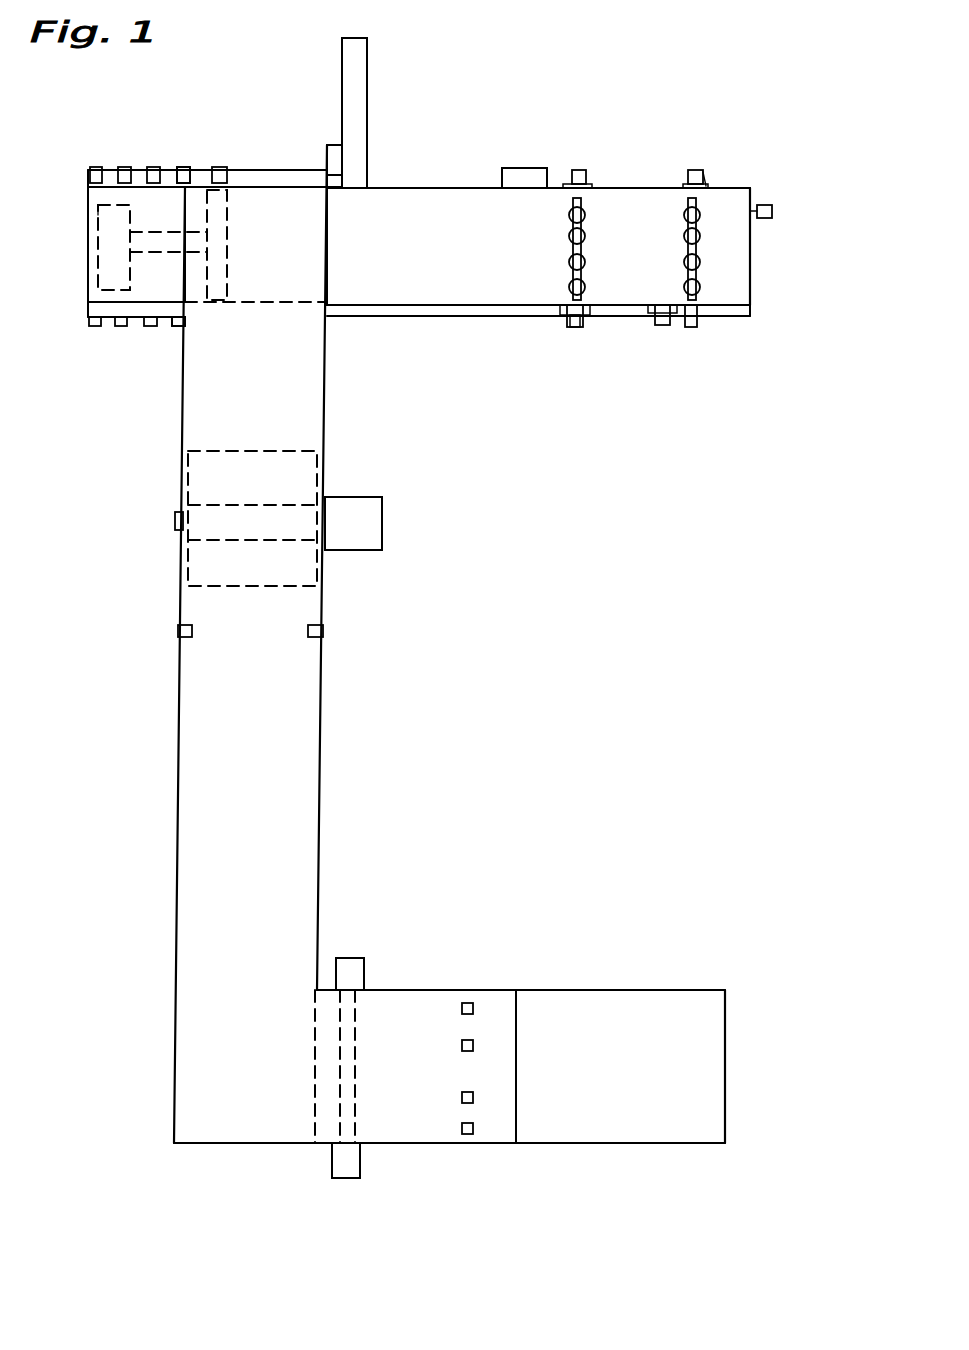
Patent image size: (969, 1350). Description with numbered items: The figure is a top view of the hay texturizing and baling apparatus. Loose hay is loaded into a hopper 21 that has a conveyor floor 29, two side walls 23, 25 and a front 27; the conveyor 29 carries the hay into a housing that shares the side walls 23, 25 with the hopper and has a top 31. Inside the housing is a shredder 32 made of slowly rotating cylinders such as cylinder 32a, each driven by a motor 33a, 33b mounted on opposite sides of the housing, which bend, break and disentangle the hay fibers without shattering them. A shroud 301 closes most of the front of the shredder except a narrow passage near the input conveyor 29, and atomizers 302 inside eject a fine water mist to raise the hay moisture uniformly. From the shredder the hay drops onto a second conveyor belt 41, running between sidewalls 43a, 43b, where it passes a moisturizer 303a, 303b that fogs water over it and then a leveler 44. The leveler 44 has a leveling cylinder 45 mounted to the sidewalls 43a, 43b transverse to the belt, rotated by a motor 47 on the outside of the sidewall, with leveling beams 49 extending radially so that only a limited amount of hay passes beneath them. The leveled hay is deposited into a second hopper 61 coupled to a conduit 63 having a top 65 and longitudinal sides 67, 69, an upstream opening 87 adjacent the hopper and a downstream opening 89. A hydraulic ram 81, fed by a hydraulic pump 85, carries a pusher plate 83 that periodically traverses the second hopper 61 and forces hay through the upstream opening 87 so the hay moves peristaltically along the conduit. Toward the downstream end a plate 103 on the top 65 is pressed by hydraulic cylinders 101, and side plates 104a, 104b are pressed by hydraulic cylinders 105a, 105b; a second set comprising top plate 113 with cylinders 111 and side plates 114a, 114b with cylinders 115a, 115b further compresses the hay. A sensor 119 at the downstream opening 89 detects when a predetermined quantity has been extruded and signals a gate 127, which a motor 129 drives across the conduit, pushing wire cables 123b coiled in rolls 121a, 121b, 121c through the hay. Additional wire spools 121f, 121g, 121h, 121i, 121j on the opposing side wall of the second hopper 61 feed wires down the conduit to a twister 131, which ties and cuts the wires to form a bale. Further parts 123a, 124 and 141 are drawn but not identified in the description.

The hopper 21 is at (482, 1065).
The side wall 23 is at (640, 989).
The side wall 25 is at (645, 1144).
The front 27 is at (726, 1062).
The conveyor floor 29 is at (565, 1067).
The top 31 is at (423, 1070).
The shredder 32 is at (347, 1089).
The cylinder 32a is at (357, 1016).
The motor 33a is at (365, 962).
The motor 33b is at (361, 1165).
The second conveyor belt 41 is at (248, 644).
The sidewall 43a is at (177, 812).
The sidewall 43b is at (319, 812).
The leveler 44 is at (288, 540).
The leveling cylinder 45 is at (176, 522).
The motor 47 is at (383, 497).
The leveling beams 49 is at (318, 587).
The second hopper 61 is at (207, 243).
The conduit 63 is at (436, 316).
The top 65 is at (538, 246).
The longitudinal side 67 is at (520, 317).
The longitudinal side 69 is at (400, 187).
The hydraulic ram 81 is at (142, 262).
The pusher plate 83 is at (230, 210).
The hydraulic pump 85 is at (96, 204).
The upstream opening 87 is at (313, 285).
The downstream opening 89 is at (768, 244).
The hydraulic cylinders 101 is at (568, 287).
The plate 103 is at (570, 260).
The side plate 104a is at (572, 186).
The side plate 104b is at (567, 327).
The hydraulic cylinder 105a is at (588, 178).
The hydraulic cylinder 105b is at (578, 328).
The hydraulic cylinders 111 is at (684, 287).
The plate 113 is at (700, 252).
The side plate 114a is at (689, 172).
The side plate 114b is at (660, 327).
The hydraulic cylinder 115a is at (706, 182).
The hydraulic cylinder 115b is at (698, 318).
The sensor 119 is at (773, 210).
The wire spool 121a is at (94, 327).
The wire spool 121b is at (120, 327).
The wire spool 121c is at (150, 327).
The wire spool 121f is at (118, 142).
The wire spool 121g is at (124, 166).
The wire spool 121h is at (153, 166).
The wire spool 121i is at (205, 142).
The wire spool 121j is at (222, 166).
The connector 123a is at (178, 327).
The wire cables 123b is at (183, 166).
The connector 124 is at (180, 327).
The gate 127 is at (368, 70).
The motor 129 is at (328, 144).
The twister 131 is at (670, 320).
The box 141 is at (505, 168).
The shroud 301 is at (517, 1000).
The atomizers 302 is at (474, 1008).
The moisturizer 303a is at (323, 637).
The moisturizer 303b is at (179, 637).